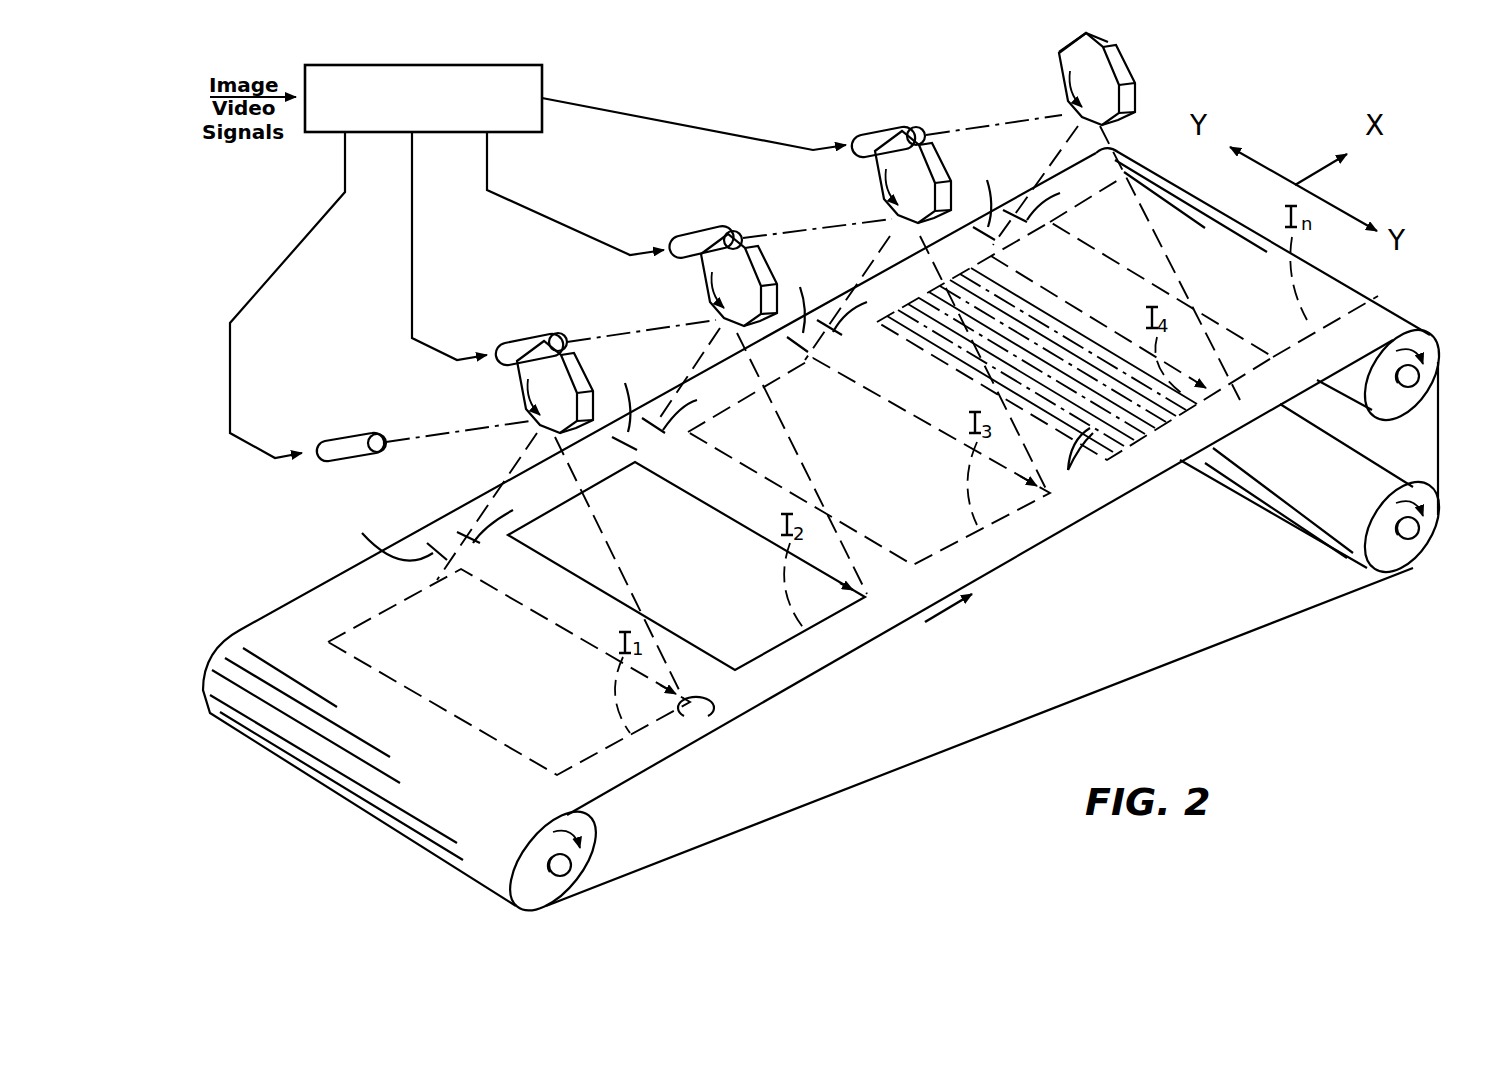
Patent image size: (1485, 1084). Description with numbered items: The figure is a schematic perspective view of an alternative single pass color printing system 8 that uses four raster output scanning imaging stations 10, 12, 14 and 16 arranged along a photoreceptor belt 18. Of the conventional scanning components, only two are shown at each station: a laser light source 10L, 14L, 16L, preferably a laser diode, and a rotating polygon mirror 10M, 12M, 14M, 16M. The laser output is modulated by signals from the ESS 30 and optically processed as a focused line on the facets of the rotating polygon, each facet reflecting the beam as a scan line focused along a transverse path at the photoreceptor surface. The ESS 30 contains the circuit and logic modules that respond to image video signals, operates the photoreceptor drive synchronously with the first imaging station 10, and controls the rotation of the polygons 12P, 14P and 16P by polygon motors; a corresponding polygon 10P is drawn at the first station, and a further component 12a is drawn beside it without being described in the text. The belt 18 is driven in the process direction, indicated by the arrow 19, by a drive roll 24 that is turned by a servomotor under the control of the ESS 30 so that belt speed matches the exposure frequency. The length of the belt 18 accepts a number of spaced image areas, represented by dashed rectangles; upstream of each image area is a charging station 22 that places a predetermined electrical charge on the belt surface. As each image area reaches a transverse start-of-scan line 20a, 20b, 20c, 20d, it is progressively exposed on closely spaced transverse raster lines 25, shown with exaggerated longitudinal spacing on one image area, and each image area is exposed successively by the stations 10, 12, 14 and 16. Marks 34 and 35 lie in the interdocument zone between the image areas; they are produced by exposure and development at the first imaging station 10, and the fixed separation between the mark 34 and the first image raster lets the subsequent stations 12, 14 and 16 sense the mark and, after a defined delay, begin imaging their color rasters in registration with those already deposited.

The single pass color printing system 8 is at (264, 173).
The first imaging station 10 is at (400, 378).
The second imaging station 12 is at (590, 275).
The third imaging station 14 is at (800, 192).
The fourth imaging station 16 is at (1000, 84).
The ESS 30 is at (530, 79).
The laser light source 10L is at (348, 440).
The rotating polygon mirror 10M is at (543, 342).
The rotating polygon mirror 10P is at (533, 370).
The laser source 12a is at (542, 334).
The rotating polygon mirror 12M is at (723, 240).
The polygon 12P is at (715, 273).
The laser light source 14L is at (720, 231).
The rotating polygon mirror 14M is at (897, 133).
The polygon 14P is at (893, 168).
The laser light source 16L is at (905, 128).
The rotating polygon mirror 16M is at (1080, 36).
The polygon 16P is at (1073, 62).
The photoreceptor belt 18 is at (1159, 480).
The belt motion direction arrow 19 is at (953, 608).
The start-of-scan line 20a is at (575, 637).
The start-of-scan line 20b is at (745, 527).
The start-of-scan line 20c is at (933, 427).
The start-of-scan line 20d is at (1117, 323).
The charging station 22 is at (694, 722).
The drive roll 24 is at (1393, 562).
The transverse raster lines 25 is at (1074, 460).
The mark 34 is at (677, 357).
The mark 35 is at (768, 357).